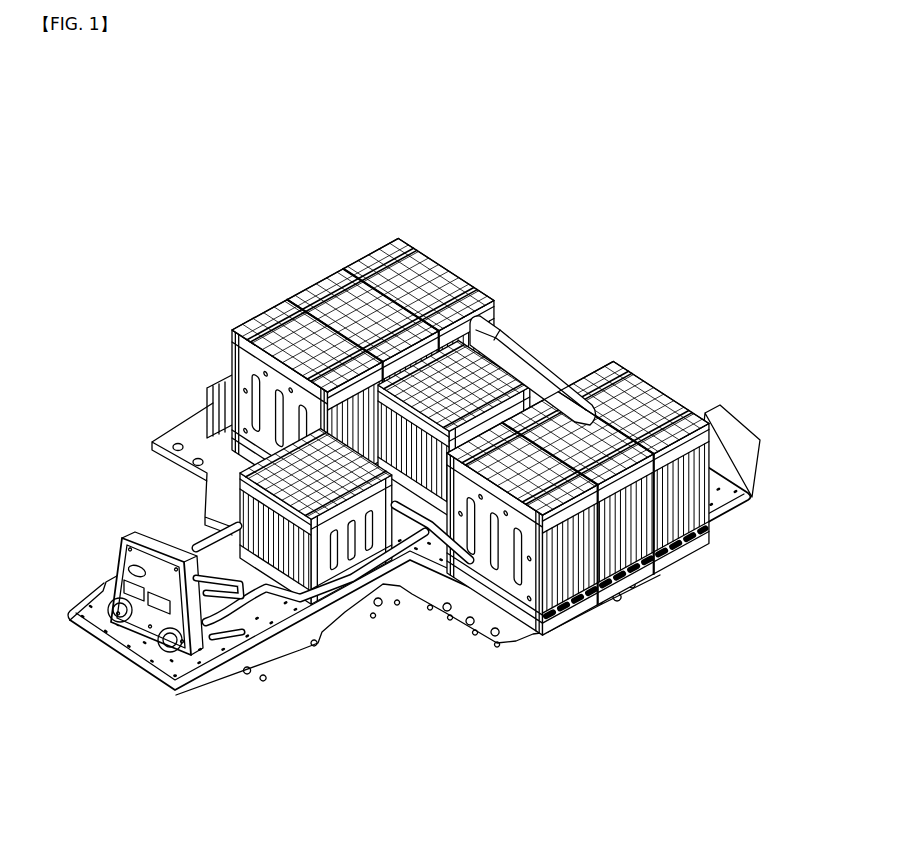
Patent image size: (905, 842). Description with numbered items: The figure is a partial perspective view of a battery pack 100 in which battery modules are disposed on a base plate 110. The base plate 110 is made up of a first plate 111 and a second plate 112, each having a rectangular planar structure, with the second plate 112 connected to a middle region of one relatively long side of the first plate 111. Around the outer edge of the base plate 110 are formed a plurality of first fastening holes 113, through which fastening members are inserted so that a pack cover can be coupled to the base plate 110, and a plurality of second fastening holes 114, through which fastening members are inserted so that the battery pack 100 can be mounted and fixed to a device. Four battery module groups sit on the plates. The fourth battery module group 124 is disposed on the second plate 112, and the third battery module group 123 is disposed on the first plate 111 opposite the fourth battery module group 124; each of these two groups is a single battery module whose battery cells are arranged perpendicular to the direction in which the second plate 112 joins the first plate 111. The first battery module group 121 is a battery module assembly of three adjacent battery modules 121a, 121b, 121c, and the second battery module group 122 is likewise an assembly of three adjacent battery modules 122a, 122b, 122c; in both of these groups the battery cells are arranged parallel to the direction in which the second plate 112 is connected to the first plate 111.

The battery pack 100 is at (88, 179).
The base plate 110 is at (532, 703).
The first plate 111 is at (500, 603).
The second plate 112 is at (410, 592).
The first fastening holes 113 is at (211, 410).
The second fastening holes 114 is at (178, 442).
The first battery module group 121 is at (288, 188).
The battery module 121a is at (298, 332).
The battery module 121b is at (352, 305).
The battery module 121c is at (407, 272).
The second battery module group 122 is at (796, 627).
The battery module 122a is at (533, 460).
The battery module 122b is at (583, 433).
The battery module 122c is at (660, 403).
The third battery module group 123 is at (460, 373).
The fourth battery module group 124 is at (308, 450).